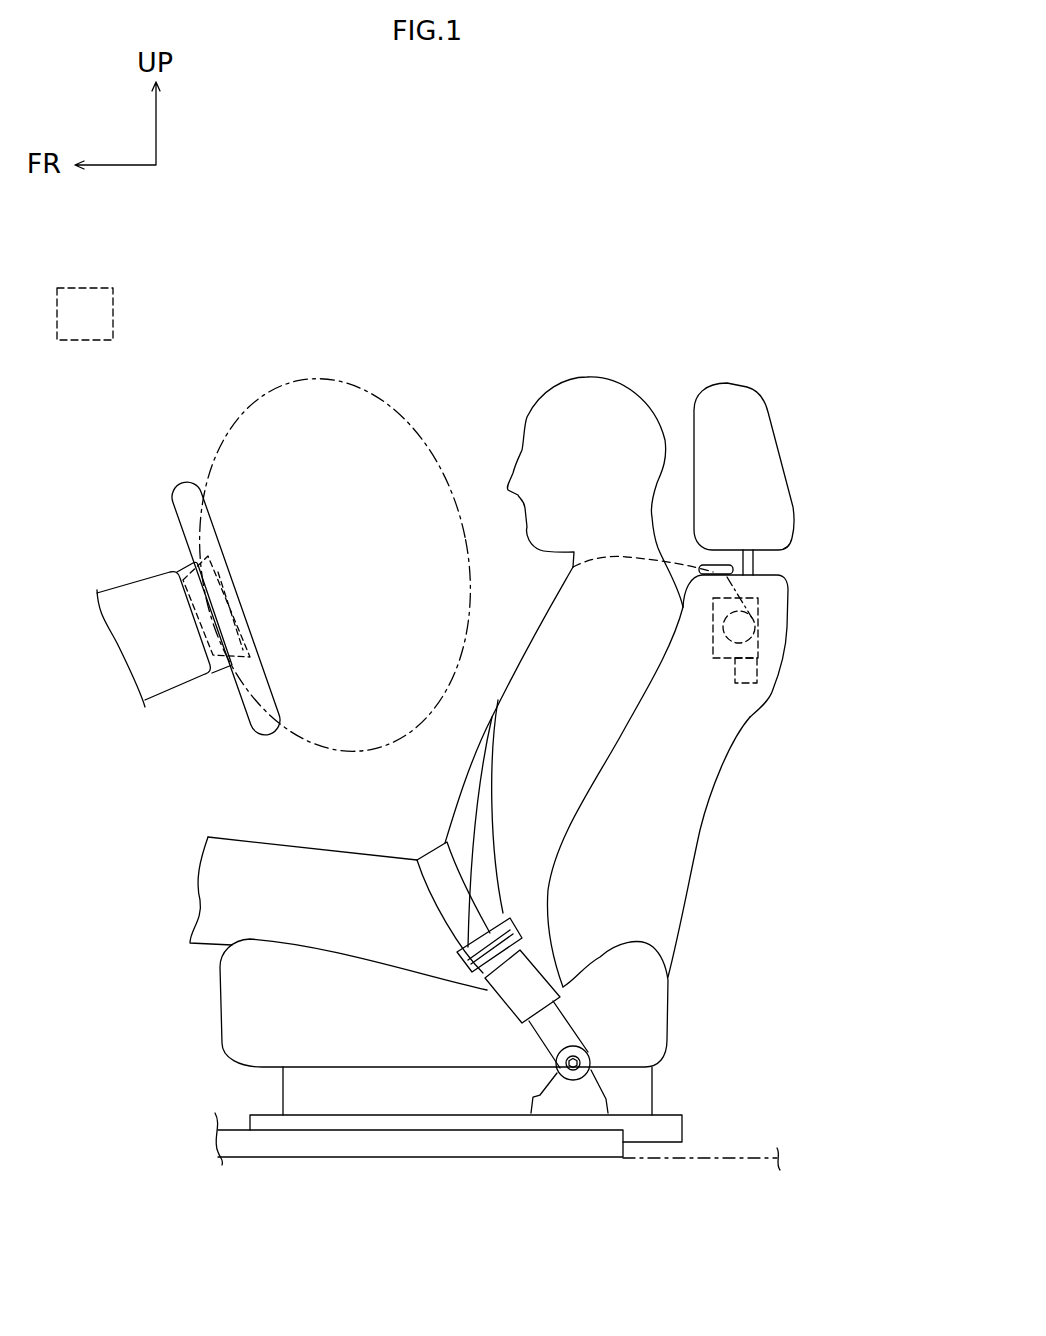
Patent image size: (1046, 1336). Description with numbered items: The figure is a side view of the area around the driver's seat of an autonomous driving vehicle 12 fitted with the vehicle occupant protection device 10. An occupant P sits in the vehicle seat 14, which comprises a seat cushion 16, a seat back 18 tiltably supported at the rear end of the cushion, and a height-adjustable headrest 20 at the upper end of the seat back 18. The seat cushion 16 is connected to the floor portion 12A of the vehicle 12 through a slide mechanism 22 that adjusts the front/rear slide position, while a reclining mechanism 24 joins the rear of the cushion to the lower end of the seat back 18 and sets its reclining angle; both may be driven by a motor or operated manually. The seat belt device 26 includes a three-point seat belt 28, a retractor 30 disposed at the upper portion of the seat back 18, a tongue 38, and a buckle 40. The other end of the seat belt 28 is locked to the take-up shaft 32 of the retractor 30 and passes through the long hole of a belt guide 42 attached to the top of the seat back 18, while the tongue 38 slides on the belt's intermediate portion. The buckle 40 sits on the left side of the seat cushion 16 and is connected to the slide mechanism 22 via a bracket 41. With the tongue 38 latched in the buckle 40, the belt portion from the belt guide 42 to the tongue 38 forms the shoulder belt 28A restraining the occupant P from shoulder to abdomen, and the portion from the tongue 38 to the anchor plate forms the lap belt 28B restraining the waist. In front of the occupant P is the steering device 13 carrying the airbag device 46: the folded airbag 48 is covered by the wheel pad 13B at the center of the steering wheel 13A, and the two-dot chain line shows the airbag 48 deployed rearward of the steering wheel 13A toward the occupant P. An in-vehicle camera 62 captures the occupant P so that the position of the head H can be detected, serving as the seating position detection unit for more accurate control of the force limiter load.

The vehicle occupant protection device 10 is at (502, 328).
The vehicle 12 is at (247, 242).
The floor portion 12A is at (720, 1155).
The steering device 13 is at (142, 570).
The steering wheel 13A is at (180, 490).
The wheel pad 13B is at (238, 578).
The vehicle seat 14 is at (728, 776).
The seat cushion 16 is at (218, 1007).
The seat back 18 is at (723, 760).
The headrest 20 is at (773, 413).
The slide mechanism 22 is at (686, 1094).
The reclining mechanism 24 is at (689, 992).
The seat belt device 26 is at (510, 575).
The seat belt 28 is at (428, 838).
The shoulder belt 28A is at (483, 787).
The lap belt 28B is at (427, 880).
The retractor 30 is at (763, 610).
The take-up shaft 32 is at (763, 640).
The tongue 38 is at (513, 923).
The buckle 40 is at (503, 1002).
The bracket 41 is at (607, 1080).
The belt guide 42 is at (723, 566).
The airbag device 46 is at (250, 618).
The airbag 48 is at (300, 378).
The in-vehicle camera 62 is at (73, 346).
The head H is at (593, 377).
The occupant P is at (288, 830).